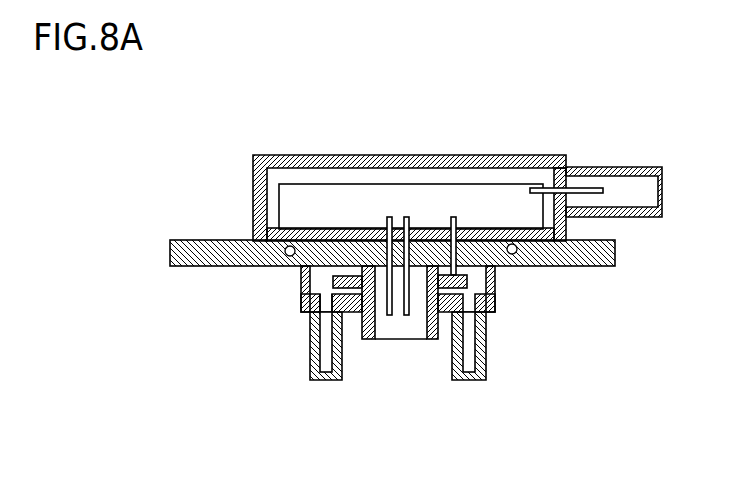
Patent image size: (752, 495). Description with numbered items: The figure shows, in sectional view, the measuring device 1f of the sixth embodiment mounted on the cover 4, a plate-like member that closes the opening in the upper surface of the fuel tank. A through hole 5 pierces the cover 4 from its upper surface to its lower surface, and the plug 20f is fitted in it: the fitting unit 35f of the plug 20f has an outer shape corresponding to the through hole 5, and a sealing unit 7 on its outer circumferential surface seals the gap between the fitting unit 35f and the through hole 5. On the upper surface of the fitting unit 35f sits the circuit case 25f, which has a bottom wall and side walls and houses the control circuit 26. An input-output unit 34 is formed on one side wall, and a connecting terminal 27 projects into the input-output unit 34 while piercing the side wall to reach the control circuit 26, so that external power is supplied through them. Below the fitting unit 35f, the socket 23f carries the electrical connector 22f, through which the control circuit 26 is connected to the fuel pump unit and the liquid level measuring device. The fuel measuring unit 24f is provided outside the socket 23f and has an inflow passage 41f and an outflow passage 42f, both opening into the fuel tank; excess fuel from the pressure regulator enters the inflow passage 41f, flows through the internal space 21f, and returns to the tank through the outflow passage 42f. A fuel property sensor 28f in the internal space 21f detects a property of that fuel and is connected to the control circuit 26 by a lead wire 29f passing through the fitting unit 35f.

The measuring device 1f is at (197, 149).
The cover 4 is at (170, 252).
The through hole 5 is at (492, 267).
The sealing unit 7 is at (230, 242).
The plug 20f is at (368, 228).
The internal space 21f is at (309, 353).
The electrical connector 22f is at (404, 315).
The socket 23f is at (362, 339).
The fuel measuring unit 24f is at (300, 309).
The circuit case 25f is at (567, 167).
The control circuit 26 is at (472, 202).
The connecting terminal 27 is at (599, 188).
The fuel property sensor 28f is at (303, 283).
The lead wire 29f is at (453, 218).
The input-output unit 34 is at (643, 167).
The fitting unit 35f is at (313, 228).
The inflow passage 41f is at (485, 380).
The outflow passage 42f is at (310, 380).